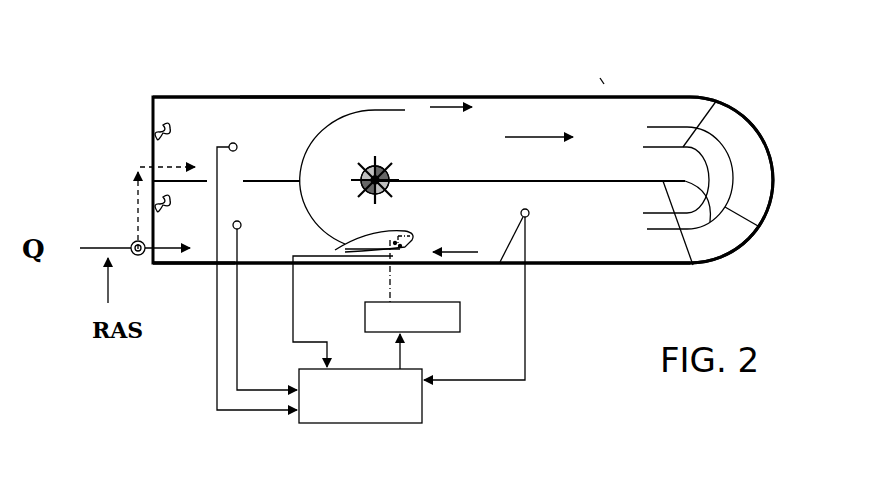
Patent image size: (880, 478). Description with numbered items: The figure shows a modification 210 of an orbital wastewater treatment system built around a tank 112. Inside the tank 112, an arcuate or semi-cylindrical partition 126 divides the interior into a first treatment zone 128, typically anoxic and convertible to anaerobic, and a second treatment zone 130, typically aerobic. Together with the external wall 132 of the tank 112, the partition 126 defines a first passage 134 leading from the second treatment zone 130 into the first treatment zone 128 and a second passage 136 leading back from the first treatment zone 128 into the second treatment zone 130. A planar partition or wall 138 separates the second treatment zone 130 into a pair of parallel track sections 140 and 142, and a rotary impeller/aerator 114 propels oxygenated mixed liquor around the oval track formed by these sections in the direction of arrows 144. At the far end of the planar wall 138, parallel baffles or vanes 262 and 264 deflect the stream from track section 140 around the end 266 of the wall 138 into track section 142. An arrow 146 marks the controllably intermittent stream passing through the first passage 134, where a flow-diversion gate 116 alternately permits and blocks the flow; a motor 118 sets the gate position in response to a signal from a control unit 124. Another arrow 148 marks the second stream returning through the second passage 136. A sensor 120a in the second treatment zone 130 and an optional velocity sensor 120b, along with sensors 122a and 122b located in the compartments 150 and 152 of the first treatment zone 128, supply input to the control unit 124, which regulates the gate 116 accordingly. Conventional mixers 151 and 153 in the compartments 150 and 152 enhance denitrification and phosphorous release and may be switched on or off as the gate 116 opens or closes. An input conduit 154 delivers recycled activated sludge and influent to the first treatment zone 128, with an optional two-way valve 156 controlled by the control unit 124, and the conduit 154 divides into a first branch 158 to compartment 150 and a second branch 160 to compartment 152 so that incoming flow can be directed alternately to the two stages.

The modification of the orbital wastewater treatment system 210 is at (607, 78).
The tank 112 is at (668, 98).
The rotary impeller/aerator 114 is at (380, 156).
The gate 116 is at (345, 249).
The motor 118 is at (461, 330).
The sensor 120a is at (476, 294).
The sensor 120b is at (409, 271).
The sensor 122a is at (240, 229).
The sensor 122b is at (233, 143).
The control unit 124 is at (312, 424).
The arcuate or semi-cylindrical partition 126 is at (329, 113).
The first treatment zone 128 is at (288, 207).
The second treatment zone 130 is at (615, 254).
The external wall 132 is at (616, 268).
The first passage 134 is at (372, 256).
The second passage 136 is at (378, 103).
The planar partition or wall 138 is at (731, 193).
The track section 140 is at (495, 172).
The track section 142 is at (500, 207).
The arrows 144 is at (513, 137).
The arrow 146 is at (452, 258).
The arrow 148 is at (448, 105).
The compartment 150 is at (212, 237).
The mixer 151 is at (153, 207).
The compartment 152 is at (292, 142).
The mixer 153 is at (158, 128).
The input conduit 154 is at (123, 245).
The two-way valve 156 is at (141, 256).
The first branch 158 is at (172, 264).
The second branch 160 is at (136, 184).
The baffle or vane 262 is at (698, 145).
The baffle or vane 264 is at (746, 226).
The end of partition or wall 266 is at (738, 242).